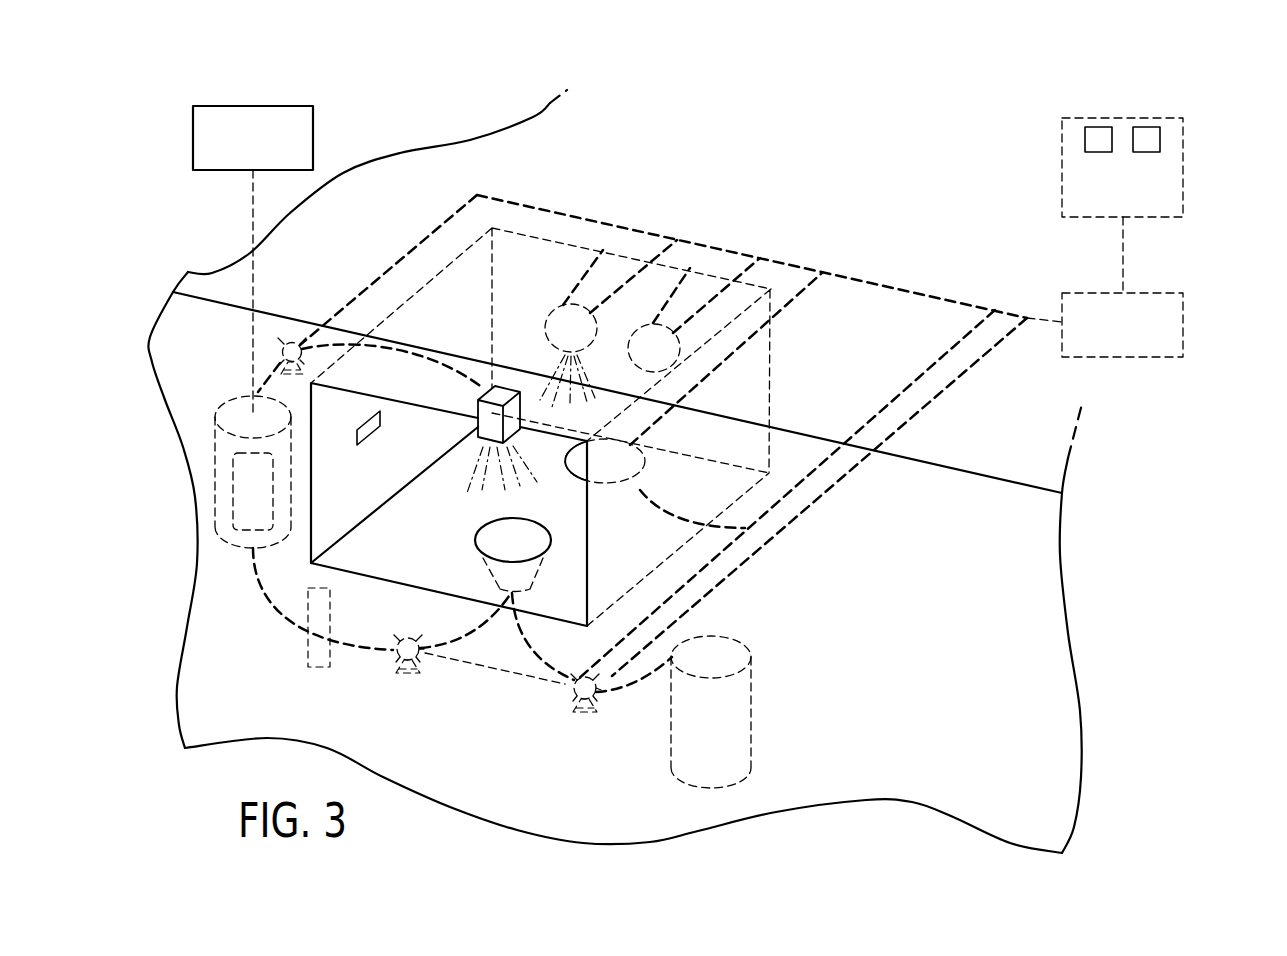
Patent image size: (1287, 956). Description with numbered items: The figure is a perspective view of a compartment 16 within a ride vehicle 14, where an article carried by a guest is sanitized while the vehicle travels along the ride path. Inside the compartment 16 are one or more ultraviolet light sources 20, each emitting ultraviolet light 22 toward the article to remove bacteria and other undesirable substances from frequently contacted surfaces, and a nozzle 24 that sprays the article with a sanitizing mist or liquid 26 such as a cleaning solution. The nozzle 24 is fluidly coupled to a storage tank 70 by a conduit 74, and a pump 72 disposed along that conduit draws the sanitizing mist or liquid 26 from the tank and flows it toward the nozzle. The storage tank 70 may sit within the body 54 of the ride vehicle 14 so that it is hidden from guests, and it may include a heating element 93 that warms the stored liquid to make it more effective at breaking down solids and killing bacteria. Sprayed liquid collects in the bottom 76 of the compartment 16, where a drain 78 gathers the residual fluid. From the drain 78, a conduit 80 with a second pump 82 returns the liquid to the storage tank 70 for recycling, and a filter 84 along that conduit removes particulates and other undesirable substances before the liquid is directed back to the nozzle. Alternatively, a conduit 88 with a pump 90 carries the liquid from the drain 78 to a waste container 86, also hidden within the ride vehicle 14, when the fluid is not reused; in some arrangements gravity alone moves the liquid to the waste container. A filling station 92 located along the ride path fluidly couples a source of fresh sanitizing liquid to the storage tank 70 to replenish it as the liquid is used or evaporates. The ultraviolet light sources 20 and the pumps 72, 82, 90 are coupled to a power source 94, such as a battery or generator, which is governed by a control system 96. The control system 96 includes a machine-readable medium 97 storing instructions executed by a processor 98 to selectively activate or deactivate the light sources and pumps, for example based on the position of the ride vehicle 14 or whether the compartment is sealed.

The ride vehicle 14 is at (397, 213).
The compartment 16 is at (397, 305).
The ultraviolet light source 20 is at (603, 250).
The ultraviolet light 22 is at (540, 373).
The nozzle 24 is at (483, 392).
The sanitizing mist or liquid 26 is at (470, 470).
The body 54 is at (330, 267).
The storage tank 70 is at (213, 462).
The pump 72 is at (281, 340).
The conduit 74 is at (279, 364).
The bottom 76 is at (410, 567).
The drain 78 is at (490, 522).
The conduit 80 is at (473, 630).
The pump 82 is at (397, 663).
The filter 84 is at (319, 668).
The waste container 86 is at (751, 711).
The conduit 88 is at (513, 660).
The pump 90 is at (573, 701).
The filling station 92 is at (252, 106).
The heating element 93 is at (233, 492).
The power source 94 is at (1183, 327).
The control system 96 is at (1183, 167).
The machine-readable medium 97 is at (1160, 138).
The processor 98 is at (1112, 138).